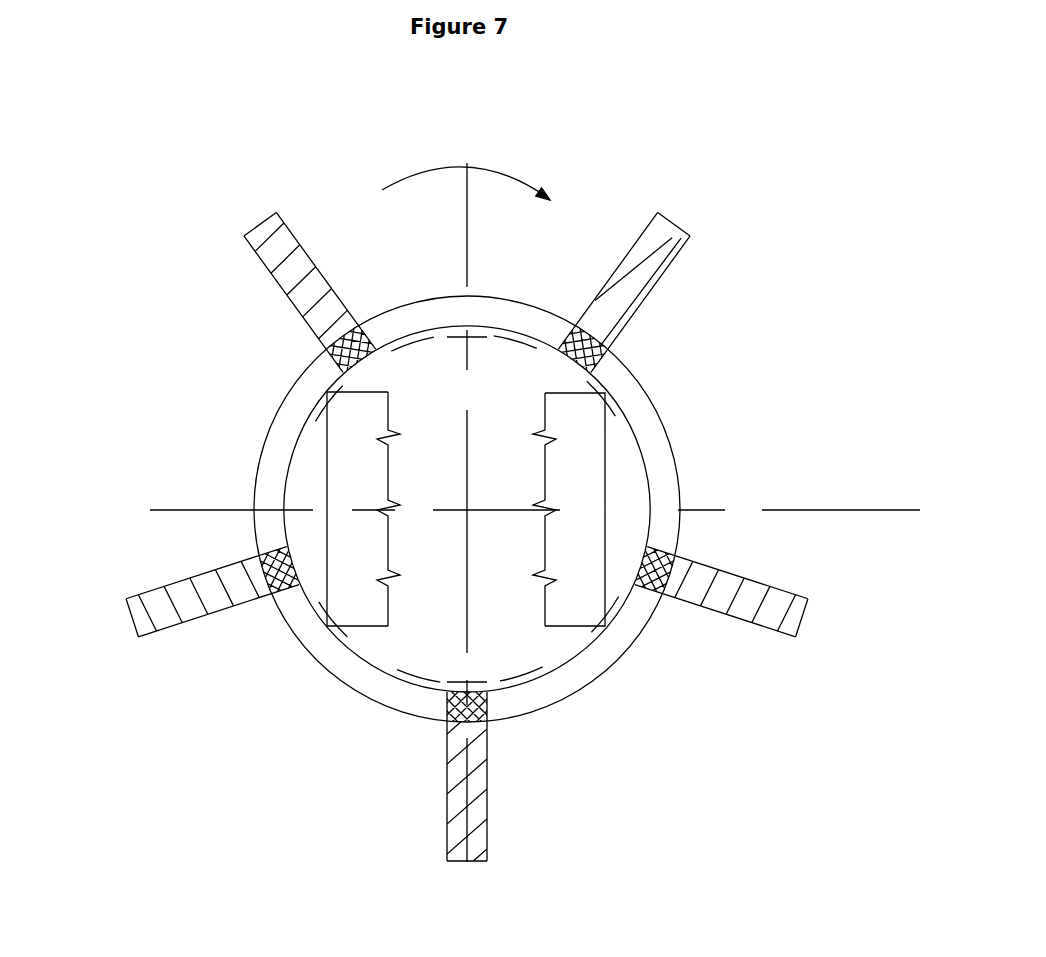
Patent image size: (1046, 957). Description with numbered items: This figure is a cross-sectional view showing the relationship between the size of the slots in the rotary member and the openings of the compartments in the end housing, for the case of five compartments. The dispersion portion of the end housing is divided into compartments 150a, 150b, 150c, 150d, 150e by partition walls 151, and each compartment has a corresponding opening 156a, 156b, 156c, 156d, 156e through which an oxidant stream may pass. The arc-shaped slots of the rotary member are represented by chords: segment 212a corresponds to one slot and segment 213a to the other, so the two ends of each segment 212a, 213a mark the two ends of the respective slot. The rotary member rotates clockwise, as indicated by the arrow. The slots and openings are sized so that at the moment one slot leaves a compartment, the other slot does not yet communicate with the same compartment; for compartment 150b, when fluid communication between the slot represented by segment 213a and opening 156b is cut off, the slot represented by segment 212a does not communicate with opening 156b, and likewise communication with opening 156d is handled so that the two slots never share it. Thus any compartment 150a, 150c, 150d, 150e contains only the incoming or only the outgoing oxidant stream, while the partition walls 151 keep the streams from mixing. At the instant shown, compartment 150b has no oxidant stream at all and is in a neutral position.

The compartment 150a is at (243, 348).
The compartment 150b is at (357, 245).
The compartment 150c is at (690, 338).
The compartment 150d is at (688, 665).
The compartment 150e is at (265, 667).
The partition wall 151 is at (690, 236).
The opening 156a is at (268, 484).
The opening 156b is at (497, 308).
The opening 156c is at (670, 498).
The opening 156d is at (553, 693).
The opening 156e is at (378, 692).
The segment 212a is at (388, 472).
The segment 213a is at (547, 472).